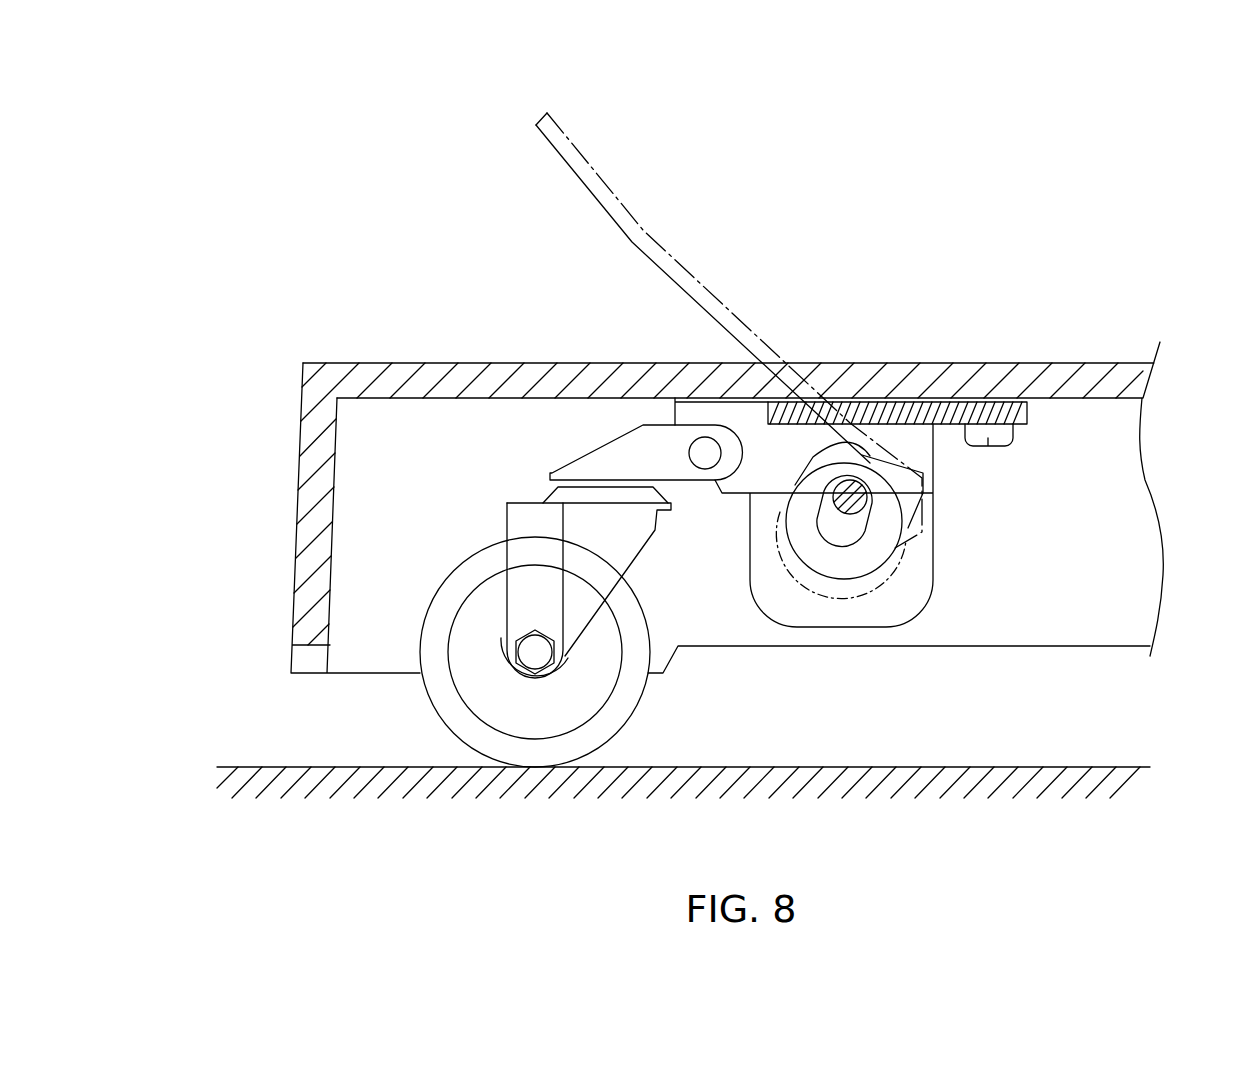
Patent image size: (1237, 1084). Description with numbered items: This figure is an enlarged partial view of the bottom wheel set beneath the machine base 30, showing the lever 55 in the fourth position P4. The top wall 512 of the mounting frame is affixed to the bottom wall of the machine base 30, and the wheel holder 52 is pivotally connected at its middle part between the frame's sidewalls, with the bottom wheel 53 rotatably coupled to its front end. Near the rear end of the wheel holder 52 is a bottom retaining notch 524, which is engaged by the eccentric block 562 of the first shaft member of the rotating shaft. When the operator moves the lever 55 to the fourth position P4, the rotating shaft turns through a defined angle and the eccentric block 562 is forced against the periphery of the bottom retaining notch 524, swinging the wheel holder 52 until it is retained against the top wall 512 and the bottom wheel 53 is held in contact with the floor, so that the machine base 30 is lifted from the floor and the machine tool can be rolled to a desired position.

The machine base 30 is at (1118, 368).
The top wall 512 is at (1007, 413).
The wheel holder 52 is at (688, 412).
The bottom wheel 53 is at (433, 607).
The lever 55 is at (643, 233).
The bottom retaining notch 524 is at (872, 495).
The eccentric block 562 is at (843, 480).
The fourth position P4 is at (612, 134).